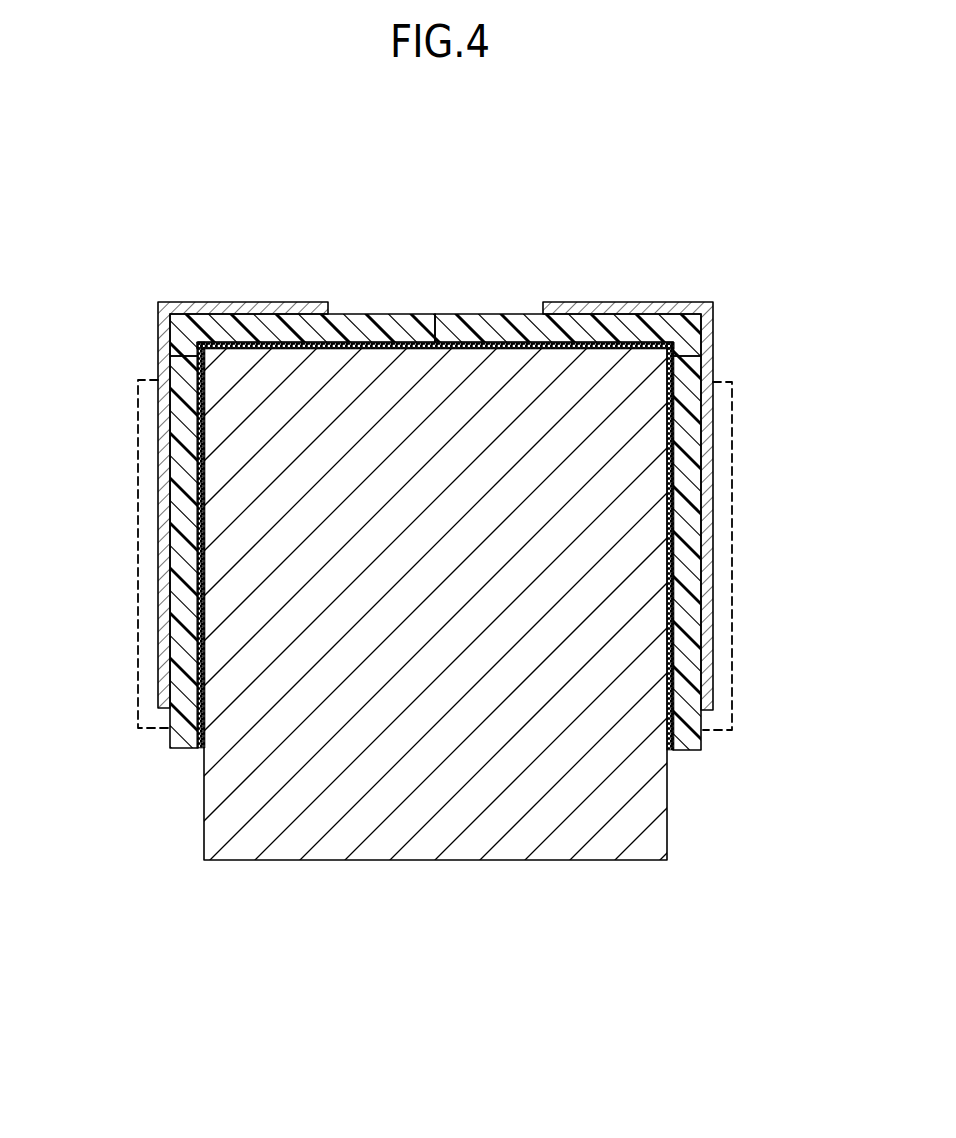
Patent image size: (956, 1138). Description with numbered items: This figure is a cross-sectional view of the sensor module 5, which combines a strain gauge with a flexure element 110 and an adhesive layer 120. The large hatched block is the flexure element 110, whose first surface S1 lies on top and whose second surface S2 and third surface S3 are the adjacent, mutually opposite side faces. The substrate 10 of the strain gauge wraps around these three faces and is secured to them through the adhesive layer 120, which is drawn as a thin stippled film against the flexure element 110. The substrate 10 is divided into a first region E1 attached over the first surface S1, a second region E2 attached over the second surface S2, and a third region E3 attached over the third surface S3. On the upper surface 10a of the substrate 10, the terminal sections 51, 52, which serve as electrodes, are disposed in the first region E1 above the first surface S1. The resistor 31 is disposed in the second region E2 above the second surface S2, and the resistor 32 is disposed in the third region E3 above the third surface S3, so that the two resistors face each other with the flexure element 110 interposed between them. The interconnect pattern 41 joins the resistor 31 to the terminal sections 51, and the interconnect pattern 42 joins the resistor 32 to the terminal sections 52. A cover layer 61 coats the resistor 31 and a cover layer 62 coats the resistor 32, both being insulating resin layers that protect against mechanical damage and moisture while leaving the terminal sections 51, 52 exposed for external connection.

The sensor module 5 is at (173, 152).
The flexure element 110 is at (433, 833).
The adhesive layer 120 is at (199, 740).
The substrate 10 is at (185, 740).
The upper surface of the substrate 10a is at (166, 738).
The resistor 31 is at (164, 625).
The resistor 32 is at (708, 603).
The interconnect pattern 41 is at (164, 399).
The interconnect pattern 42 is at (706, 402).
The terminal sections 51 is at (243, 309).
The terminal sections 52 is at (628, 311).
The cover layer 61 is at (150, 380).
The cover layer 62 is at (722, 382).
The first surface S1 is at (433, 348).
The second surface S2 is at (206, 548).
The third surface S3 is at (665, 548).
The first region E1 is at (713, 238).
The second region E2 is at (92, 302).
The third region E3 is at (778, 302).